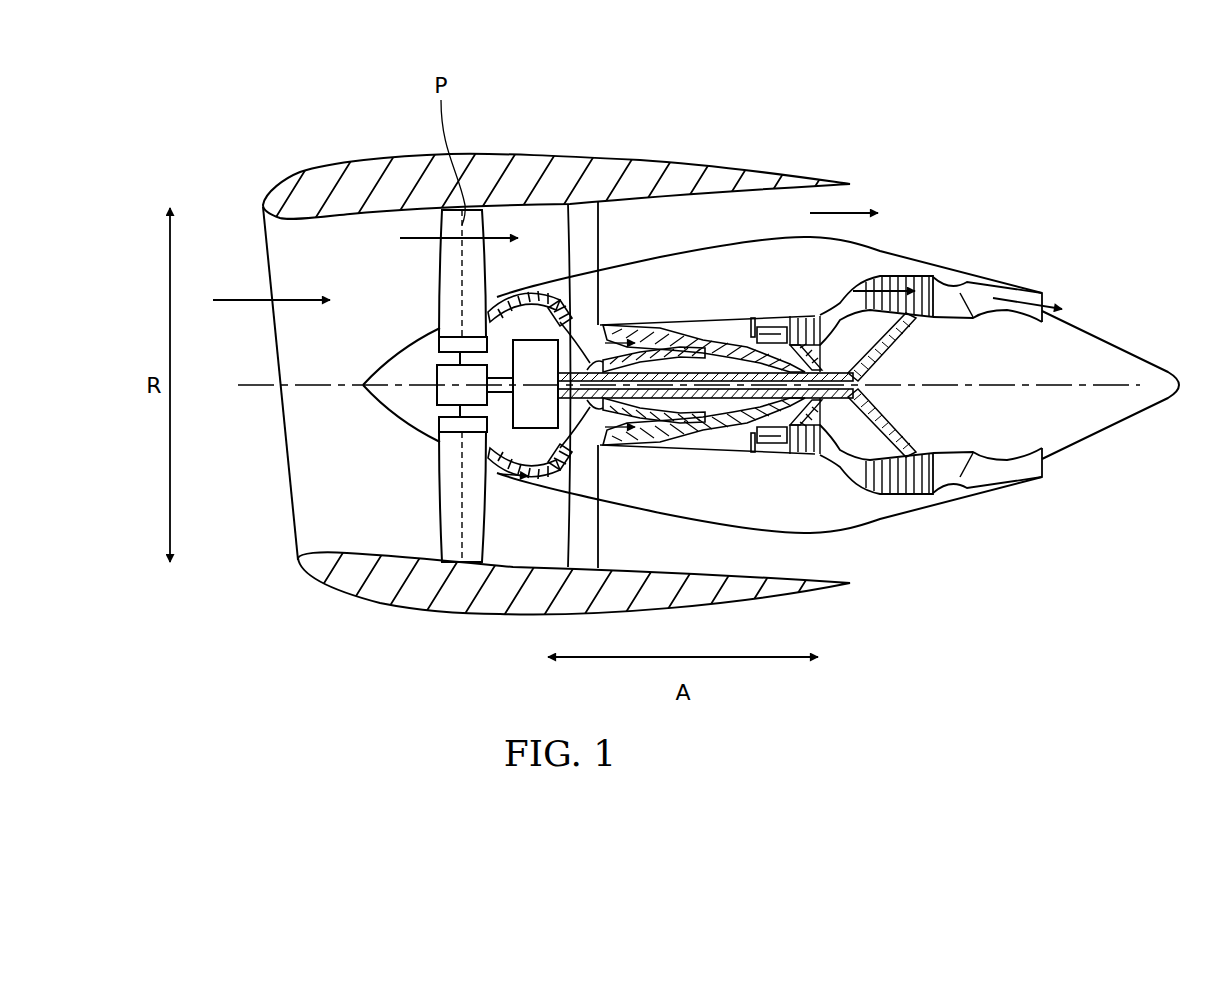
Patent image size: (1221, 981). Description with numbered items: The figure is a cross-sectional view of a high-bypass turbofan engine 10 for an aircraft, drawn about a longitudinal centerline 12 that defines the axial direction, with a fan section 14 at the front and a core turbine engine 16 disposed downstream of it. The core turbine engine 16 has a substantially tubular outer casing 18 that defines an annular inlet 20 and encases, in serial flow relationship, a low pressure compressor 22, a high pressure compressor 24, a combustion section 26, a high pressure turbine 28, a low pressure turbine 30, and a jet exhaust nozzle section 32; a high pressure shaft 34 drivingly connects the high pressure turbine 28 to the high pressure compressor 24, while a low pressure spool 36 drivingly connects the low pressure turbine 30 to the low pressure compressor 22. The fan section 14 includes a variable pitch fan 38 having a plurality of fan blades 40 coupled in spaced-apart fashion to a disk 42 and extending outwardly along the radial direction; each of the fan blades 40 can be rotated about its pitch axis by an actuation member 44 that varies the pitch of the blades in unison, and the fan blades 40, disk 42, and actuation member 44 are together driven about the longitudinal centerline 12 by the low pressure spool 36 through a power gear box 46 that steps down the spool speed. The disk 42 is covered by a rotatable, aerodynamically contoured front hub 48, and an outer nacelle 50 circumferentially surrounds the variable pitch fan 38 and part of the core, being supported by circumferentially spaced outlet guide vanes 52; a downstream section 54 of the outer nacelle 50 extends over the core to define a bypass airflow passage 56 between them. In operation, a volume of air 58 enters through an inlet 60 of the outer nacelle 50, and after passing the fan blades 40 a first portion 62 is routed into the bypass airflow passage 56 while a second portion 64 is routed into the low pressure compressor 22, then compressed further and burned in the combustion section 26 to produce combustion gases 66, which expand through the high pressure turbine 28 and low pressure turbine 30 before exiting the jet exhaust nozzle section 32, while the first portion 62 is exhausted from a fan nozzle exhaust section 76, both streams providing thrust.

The turbofan engine 10 is at (1014, 118).
The longitudinal centerline 12 is at (1134, 383).
The fan section 14 is at (372, 257).
The core turbine engine 16 is at (685, 283).
The outer casing 18 is at (700, 516).
The annular inlet 20 is at (513, 478).
The low pressure compressor 22 is at (568, 446).
The high pressure compressor 24 is at (660, 440).
The combustion section 26 is at (760, 449).
The high pressure turbine 28 is at (842, 444).
The low pressure turbine 30 is at (905, 500).
The jet exhaust nozzle section 32 is at (1001, 485).
The high pressure shaft 34 is at (745, 332).
The low pressure spool 36 is at (840, 360).
The variable pitch fan 38 is at (407, 427).
The fan blades 40 is at (440, 520).
The disk 42 is at (443, 345).
The actuation member 44 is at (437, 378).
The power gear box 46 is at (548, 372).
The front hub 48 is at (374, 398).
The outer nacelle 50 is at (503, 618).
The outlet guide vanes 52 is at (602, 218).
The downstream section 54 is at (779, 178).
The bypass airflow passage 56 is at (728, 226).
The volume of air 58 is at (242, 300).
The inlet 60 is at (293, 522).
The first portion 62 is at (413, 245).
The second portion 64 is at (530, 277).
The combustion gases 66 is at (893, 276).
The fan nozzle exhaust section 76 is at (854, 193).